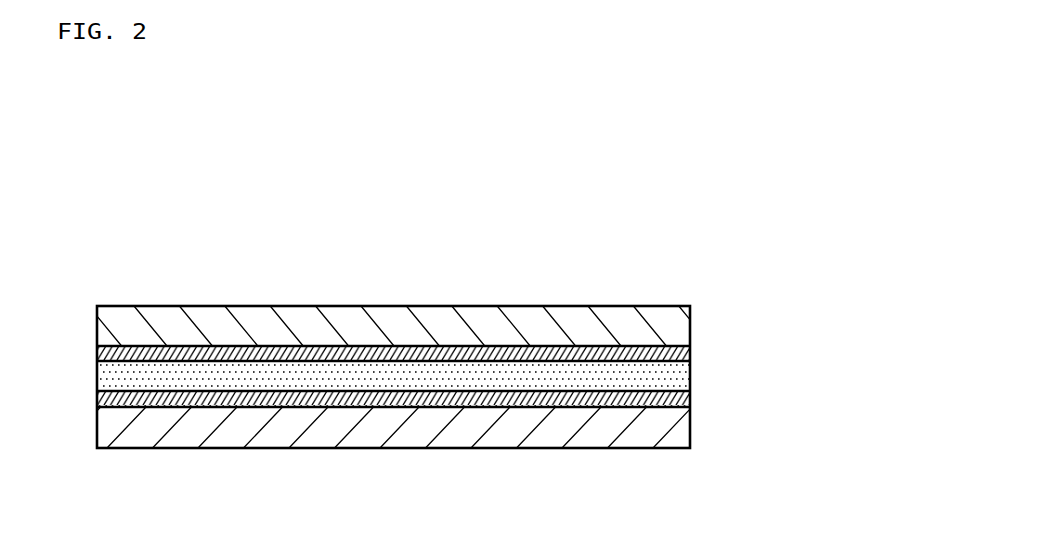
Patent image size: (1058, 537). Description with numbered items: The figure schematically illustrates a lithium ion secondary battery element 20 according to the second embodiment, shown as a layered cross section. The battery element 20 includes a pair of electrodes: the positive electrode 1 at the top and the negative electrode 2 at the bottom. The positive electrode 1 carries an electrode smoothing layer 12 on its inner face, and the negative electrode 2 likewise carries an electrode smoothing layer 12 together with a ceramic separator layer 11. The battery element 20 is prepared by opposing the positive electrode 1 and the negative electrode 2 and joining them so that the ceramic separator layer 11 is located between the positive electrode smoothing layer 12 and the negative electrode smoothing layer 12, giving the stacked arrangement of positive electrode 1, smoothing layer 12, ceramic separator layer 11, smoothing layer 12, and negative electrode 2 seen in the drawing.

The battery element 20 is at (386, 283).
The positive electrode 1 is at (690, 325).
The electrode smoothing layer 12 is at (690, 350).
The ceramic separator layer 11 is at (690, 376).
The negative electrode 2 is at (690, 427).